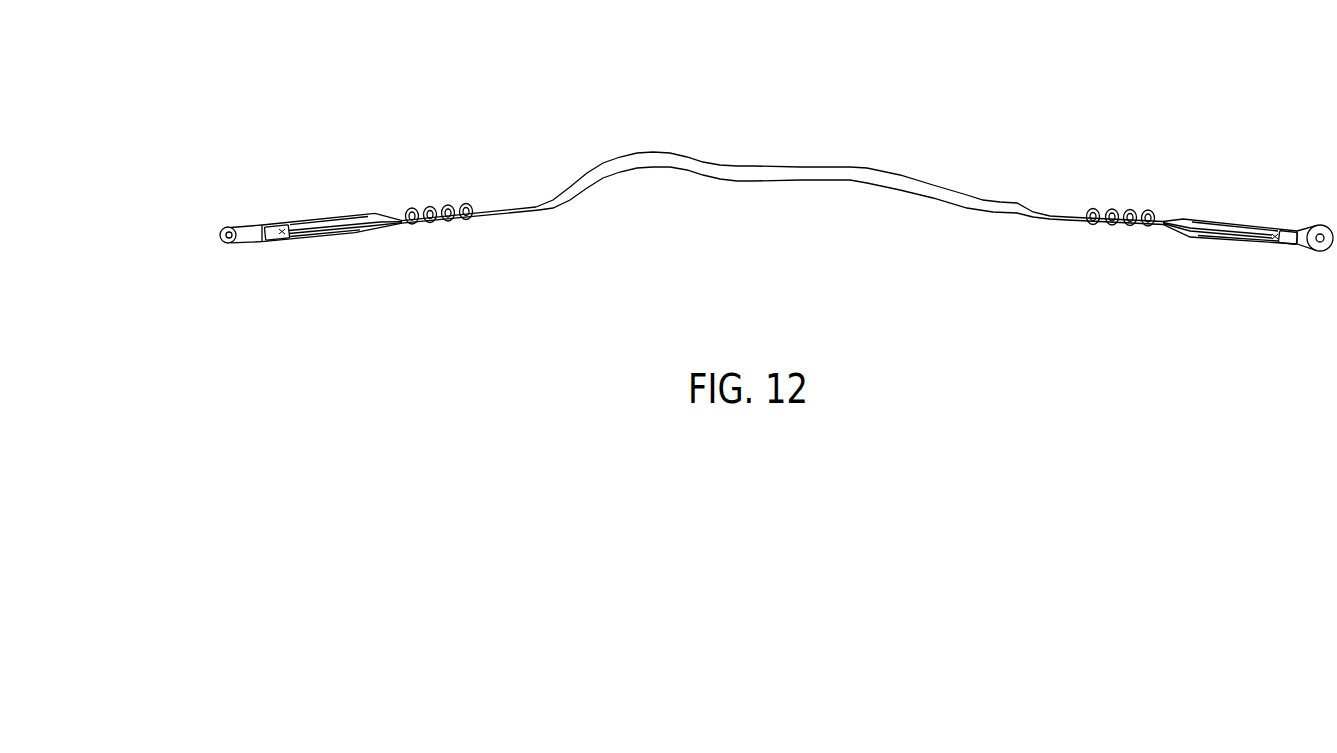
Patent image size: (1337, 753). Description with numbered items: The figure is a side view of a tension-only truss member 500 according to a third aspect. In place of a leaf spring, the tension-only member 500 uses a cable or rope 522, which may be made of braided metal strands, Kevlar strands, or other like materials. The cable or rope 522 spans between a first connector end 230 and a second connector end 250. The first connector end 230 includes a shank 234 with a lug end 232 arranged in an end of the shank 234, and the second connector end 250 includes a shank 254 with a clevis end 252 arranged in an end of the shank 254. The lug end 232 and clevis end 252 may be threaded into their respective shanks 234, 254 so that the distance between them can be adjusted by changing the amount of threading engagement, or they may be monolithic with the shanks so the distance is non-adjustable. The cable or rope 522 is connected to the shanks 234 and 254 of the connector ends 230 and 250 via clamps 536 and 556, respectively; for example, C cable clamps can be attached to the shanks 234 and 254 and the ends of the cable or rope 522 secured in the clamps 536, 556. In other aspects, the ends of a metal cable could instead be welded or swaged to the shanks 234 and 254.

The tension-only member 500 is at (752, 108).
The cable or rope 522 is at (767, 184).
The second connector end 250 is at (281, 206).
The clevis end 252 is at (218, 230).
The shank 254 is at (327, 236).
The clamp 556 is at (440, 228).
The first connector end 230 is at (1242, 218).
The clamp 536 is at (1109, 200).
The shank 234 is at (1243, 245).
The lug end 232 is at (1320, 225).